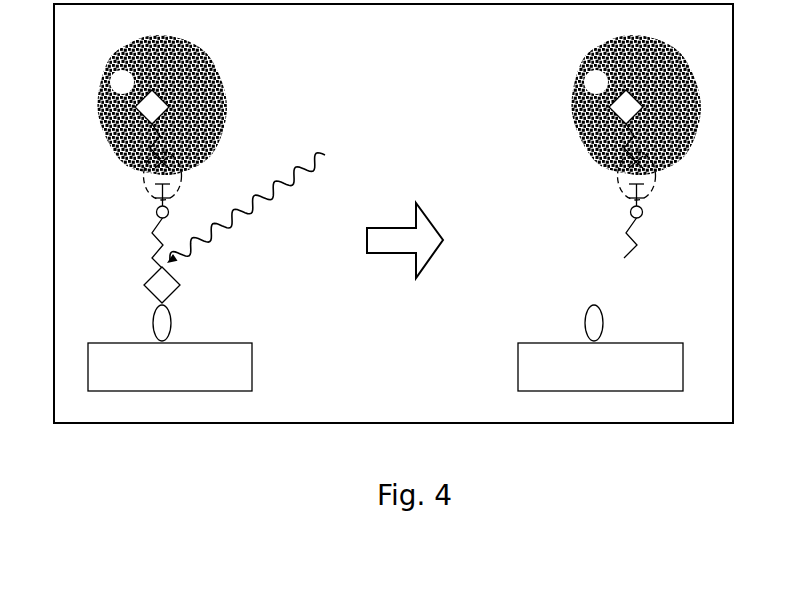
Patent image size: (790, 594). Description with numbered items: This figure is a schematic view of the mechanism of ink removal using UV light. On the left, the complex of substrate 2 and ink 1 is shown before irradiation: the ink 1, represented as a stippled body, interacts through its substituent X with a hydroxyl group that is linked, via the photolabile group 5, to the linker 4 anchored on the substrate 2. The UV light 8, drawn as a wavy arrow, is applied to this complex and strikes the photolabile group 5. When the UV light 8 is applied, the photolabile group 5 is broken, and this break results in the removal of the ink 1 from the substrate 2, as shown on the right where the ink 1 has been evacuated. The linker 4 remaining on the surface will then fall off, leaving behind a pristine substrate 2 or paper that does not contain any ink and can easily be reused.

The ink 1 is at (399, 151).
The substrate 2 is at (154, 380).
The linker 4 is at (150, 318).
The photolabile group 5 is at (142, 275).
The UV light 8 is at (250, 199).